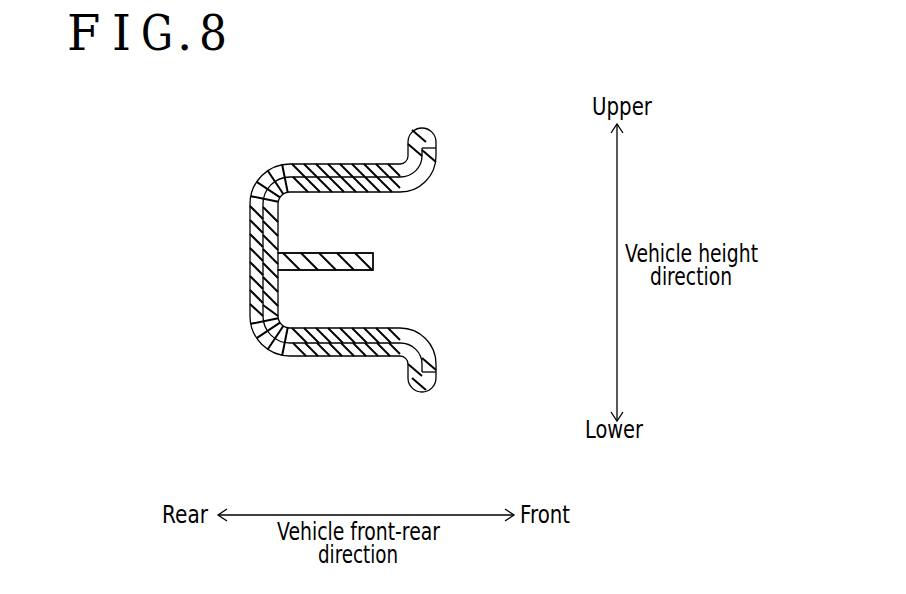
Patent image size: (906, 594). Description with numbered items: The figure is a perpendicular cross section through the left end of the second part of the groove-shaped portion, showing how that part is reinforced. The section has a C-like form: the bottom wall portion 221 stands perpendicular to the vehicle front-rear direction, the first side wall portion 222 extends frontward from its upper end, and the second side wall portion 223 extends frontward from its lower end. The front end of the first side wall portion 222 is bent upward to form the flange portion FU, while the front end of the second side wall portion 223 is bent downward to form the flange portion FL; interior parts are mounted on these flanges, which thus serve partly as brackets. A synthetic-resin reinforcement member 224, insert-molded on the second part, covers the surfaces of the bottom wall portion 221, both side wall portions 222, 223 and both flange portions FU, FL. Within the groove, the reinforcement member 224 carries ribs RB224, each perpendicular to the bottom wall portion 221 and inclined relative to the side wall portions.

The bottom wall portion 221 is at (253, 258).
The first side wall portion 222 is at (357, 172).
The second side wall portion 223 is at (330, 347).
The reinforcement member 224 is at (261, 188).
The rib RB224 is at (376, 266).
The flange portion FU is at (437, 160).
The flange portion FL is at (437, 376).